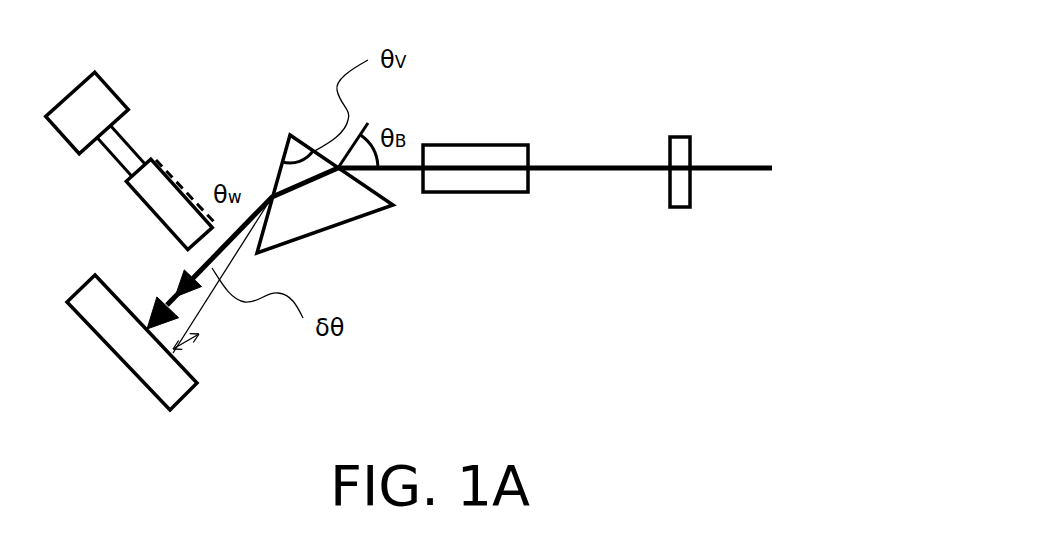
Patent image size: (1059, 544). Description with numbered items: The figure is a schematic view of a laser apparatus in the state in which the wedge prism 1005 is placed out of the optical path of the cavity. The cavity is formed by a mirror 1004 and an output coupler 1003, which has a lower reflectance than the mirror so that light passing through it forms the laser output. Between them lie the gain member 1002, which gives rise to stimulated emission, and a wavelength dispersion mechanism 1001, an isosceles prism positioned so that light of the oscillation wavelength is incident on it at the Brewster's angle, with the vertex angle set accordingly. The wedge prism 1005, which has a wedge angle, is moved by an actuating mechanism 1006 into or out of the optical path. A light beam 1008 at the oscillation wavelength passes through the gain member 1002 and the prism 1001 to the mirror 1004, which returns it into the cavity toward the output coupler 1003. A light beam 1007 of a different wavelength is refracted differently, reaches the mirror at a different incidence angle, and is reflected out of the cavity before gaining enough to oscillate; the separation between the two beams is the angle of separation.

The wavelength dispersion mechanism 1001 is at (358, 202).
The gain member 1002 is at (480, 180).
The output coupler 1003 is at (678, 187).
The mirror 1004 is at (178, 383).
The wedge prism 1005 is at (155, 187).
The actuating mechanism 1006 is at (98, 100).
The light beam 1007 is at (192, 345).
The light beam 1008 is at (170, 285).